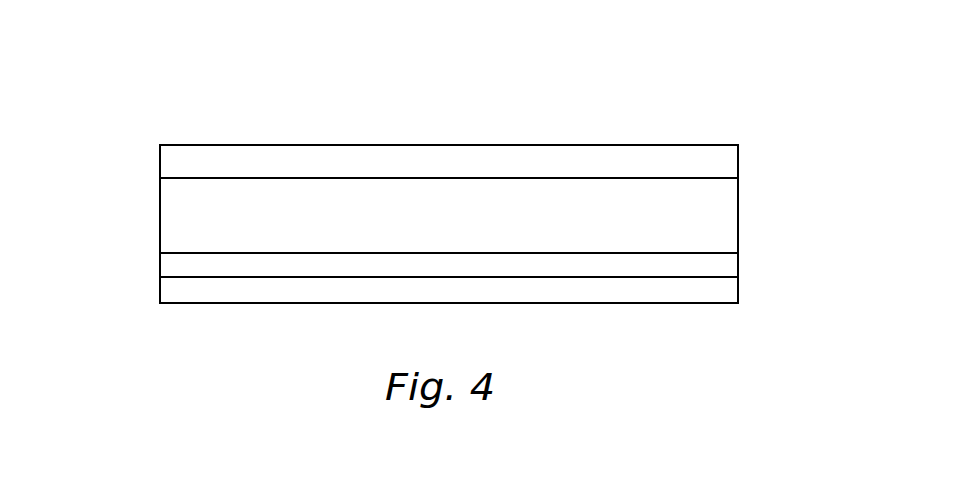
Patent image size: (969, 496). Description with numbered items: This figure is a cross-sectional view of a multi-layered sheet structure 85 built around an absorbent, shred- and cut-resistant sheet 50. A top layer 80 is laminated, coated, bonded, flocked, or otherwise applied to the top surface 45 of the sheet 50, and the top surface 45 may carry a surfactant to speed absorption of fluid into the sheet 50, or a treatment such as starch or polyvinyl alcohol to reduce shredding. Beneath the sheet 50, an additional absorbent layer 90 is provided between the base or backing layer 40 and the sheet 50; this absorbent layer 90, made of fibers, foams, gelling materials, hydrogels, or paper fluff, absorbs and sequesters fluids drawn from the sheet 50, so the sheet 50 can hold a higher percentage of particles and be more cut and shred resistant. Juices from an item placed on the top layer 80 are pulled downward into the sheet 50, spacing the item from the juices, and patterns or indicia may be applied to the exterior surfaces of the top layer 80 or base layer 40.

The base layer 40 is at (218, 283).
The top surface 45 is at (193, 166).
The sheet 50 is at (533, 213).
The top layer 80 is at (670, 160).
The multi-layered sheet structure 85 is at (745, 218).
The absorbent layer 90 is at (305, 263).